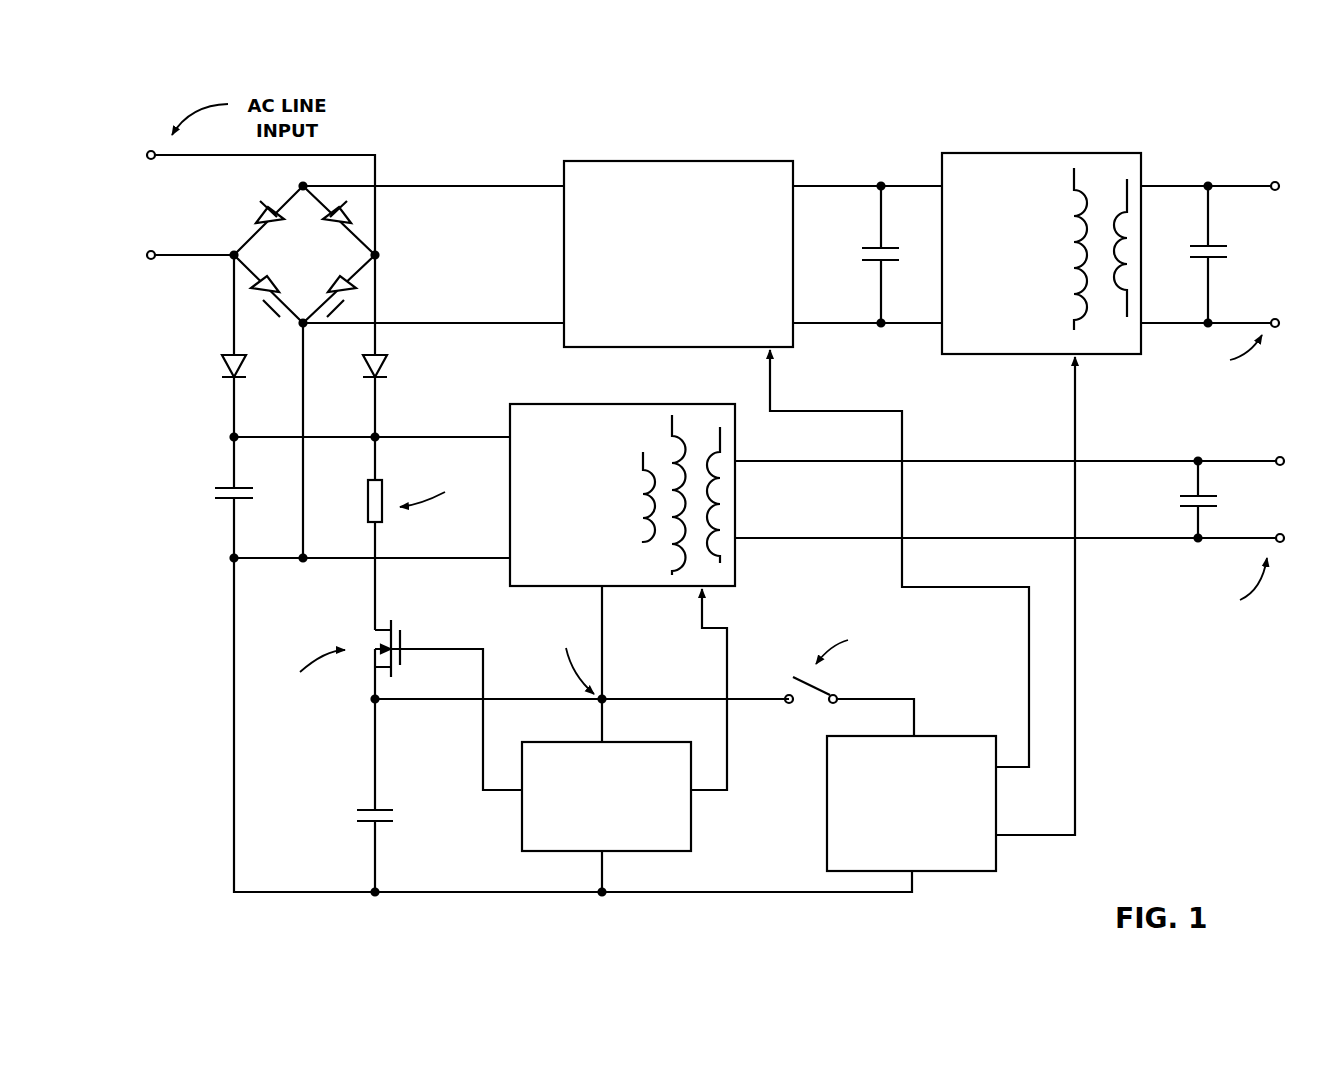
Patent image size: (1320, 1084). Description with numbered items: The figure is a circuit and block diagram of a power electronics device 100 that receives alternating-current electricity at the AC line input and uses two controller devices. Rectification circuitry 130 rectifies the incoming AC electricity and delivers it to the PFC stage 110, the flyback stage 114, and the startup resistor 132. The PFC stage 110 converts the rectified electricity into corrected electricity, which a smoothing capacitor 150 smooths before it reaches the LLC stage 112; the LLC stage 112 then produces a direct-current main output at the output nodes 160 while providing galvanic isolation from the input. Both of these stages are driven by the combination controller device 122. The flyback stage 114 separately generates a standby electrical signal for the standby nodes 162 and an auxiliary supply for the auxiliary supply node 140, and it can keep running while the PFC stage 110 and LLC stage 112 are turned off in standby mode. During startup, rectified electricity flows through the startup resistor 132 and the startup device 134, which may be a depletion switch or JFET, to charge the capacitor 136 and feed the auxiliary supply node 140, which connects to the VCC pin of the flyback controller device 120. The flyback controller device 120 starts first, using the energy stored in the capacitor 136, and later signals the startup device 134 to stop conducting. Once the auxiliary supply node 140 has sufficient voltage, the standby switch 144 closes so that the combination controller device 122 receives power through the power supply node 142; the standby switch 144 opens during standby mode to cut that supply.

The power electronics device 100 is at (1186, 786).
The power factor correction (PFC) stage 110 is at (678, 254).
The LLC stage 112 is at (1041, 253).
The flyback stage 114 is at (622, 495).
The flyback controller device 120 is at (624, 720).
The combination controller device 122 is at (922, 610).
The rectification circuitry 130 is at (232, 226).
The startup resistor 132 is at (350, 500).
The startup device 134 is at (343, 633).
The capacitor 136 is at (345, 828).
The auxiliary supply node 140 is at (604, 697).
The power supply node 142 is at (916, 734).
The standby switch 144 is at (805, 722).
The smoothing capacitor 150 is at (864, 275).
The output nodes 160 is at (1218, 158).
The standby nodes 162 is at (1215, 443).